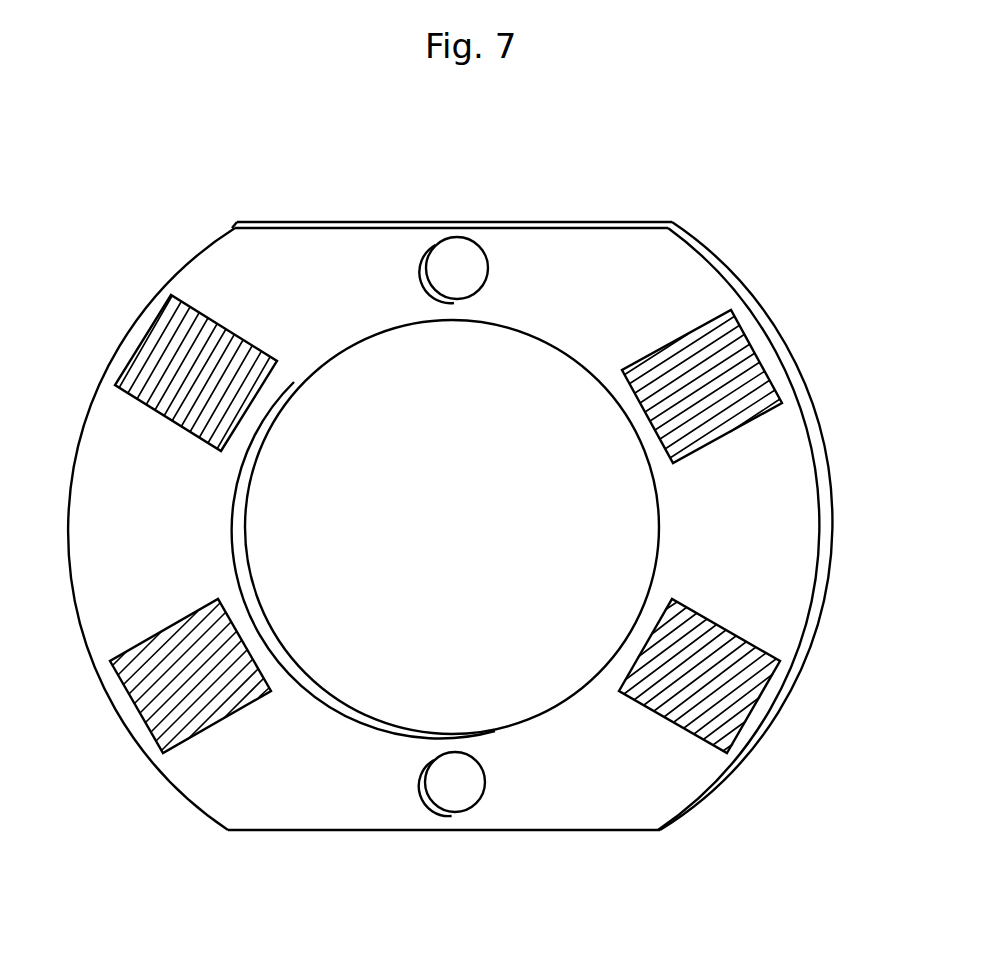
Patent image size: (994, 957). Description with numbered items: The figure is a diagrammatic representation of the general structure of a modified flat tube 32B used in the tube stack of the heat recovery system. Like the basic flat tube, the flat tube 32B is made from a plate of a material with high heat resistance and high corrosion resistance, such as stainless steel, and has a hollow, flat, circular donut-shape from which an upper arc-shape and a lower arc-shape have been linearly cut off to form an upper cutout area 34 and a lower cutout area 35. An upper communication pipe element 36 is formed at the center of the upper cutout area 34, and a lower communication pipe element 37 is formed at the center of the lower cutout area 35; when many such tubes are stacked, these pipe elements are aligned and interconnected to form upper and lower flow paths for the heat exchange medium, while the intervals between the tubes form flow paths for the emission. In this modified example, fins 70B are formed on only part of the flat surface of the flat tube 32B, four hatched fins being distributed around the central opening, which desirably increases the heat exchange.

The flat tube 32B is at (682, 283).
The upper cutout area 34 is at (598, 222).
The lower cutout area 35 is at (621, 833).
The upper communication pipe element 36 is at (462, 258).
The lower communication pipe element 37 is at (463, 787).
The fins 70B is at (720, 372).